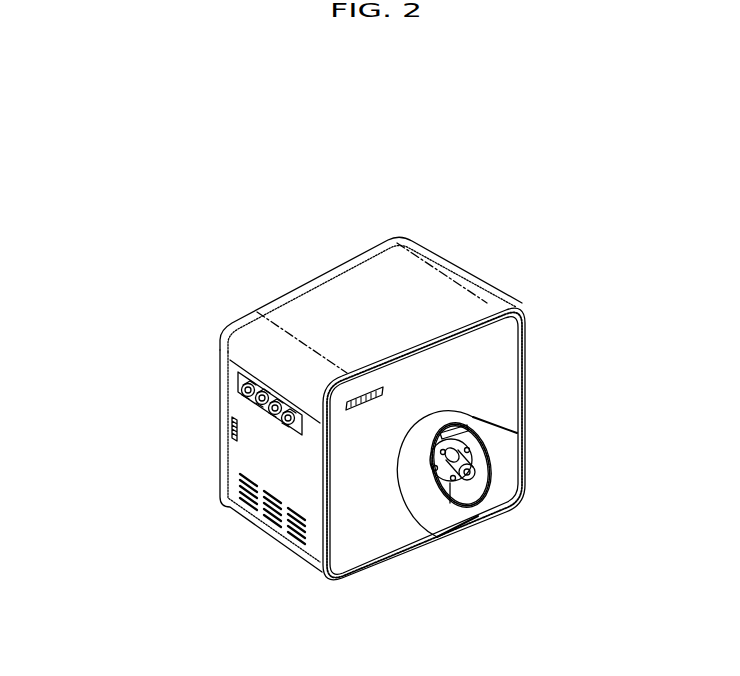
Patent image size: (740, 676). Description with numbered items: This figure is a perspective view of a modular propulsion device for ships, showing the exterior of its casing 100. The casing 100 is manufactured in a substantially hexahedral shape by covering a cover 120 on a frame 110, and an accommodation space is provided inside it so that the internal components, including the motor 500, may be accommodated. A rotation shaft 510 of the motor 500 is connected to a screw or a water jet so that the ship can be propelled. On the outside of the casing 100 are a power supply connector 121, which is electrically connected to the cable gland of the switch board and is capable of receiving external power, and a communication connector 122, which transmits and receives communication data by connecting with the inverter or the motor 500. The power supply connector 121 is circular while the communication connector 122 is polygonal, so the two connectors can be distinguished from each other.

The casing 100 is at (543, 134).
The frame 110 is at (356, 245).
The cover 120 is at (448, 305).
The power supply connector 121 is at (245, 402).
The communication connector 122 is at (273, 424).
The motor 500 is at (477, 447).
The rotation shaft 510 is at (465, 476).